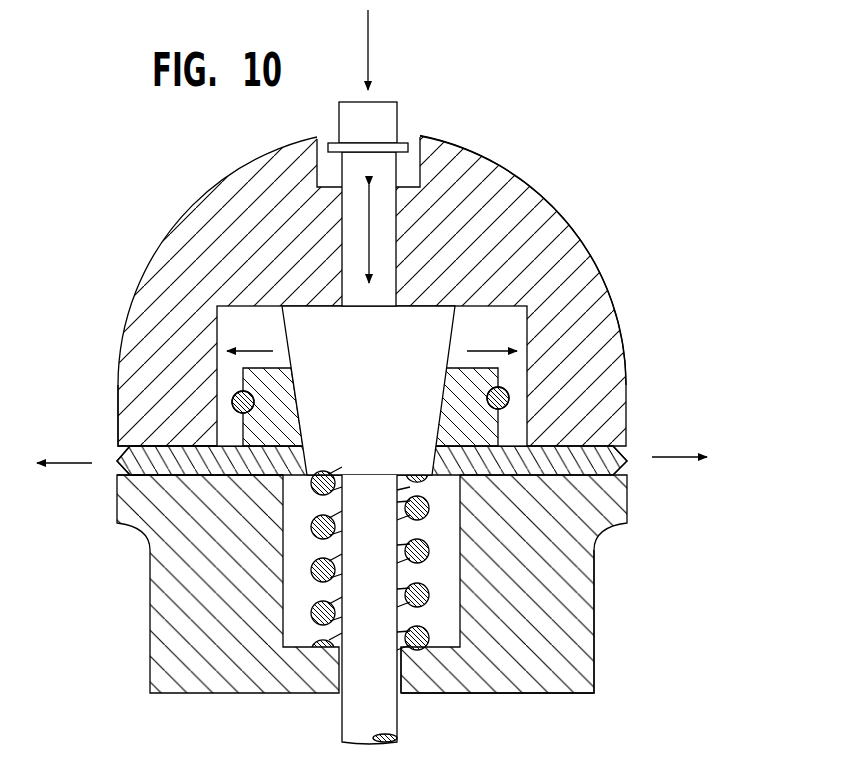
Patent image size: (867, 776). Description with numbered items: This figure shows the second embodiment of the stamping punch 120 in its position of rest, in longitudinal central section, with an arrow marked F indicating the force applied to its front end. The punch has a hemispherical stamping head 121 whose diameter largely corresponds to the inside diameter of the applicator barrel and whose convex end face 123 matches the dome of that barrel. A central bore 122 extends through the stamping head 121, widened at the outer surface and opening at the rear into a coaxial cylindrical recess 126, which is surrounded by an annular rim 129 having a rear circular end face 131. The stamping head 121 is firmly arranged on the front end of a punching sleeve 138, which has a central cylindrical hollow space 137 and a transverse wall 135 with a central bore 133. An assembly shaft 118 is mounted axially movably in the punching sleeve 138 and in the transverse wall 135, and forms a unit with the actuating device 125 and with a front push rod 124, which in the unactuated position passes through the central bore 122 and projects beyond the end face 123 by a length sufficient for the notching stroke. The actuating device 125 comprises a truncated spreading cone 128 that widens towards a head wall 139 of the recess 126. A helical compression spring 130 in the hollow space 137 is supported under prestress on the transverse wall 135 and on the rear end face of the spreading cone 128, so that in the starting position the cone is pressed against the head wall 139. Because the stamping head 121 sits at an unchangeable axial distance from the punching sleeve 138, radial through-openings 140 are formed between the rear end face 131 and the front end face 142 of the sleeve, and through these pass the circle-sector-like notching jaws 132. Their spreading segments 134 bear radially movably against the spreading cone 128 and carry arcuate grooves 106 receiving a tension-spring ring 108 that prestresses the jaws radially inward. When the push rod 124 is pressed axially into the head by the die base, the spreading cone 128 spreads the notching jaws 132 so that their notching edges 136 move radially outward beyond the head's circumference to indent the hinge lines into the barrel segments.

The applied force F is at (368, 16).
The stamping punch 120 is at (170, 205).
The stamping head 121 is at (470, 170).
The end face 123 is at (548, 197).
The push rod 124 is at (380, 117).
The central bore 122 is at (347, 245).
The cylindrical recess 126 is at (218, 326).
The spreading cone 128 is at (450, 300).
The head wall 139 is at (508, 310).
The actuating device 125 is at (458, 333).
The arcuate grooves 106 is at (497, 370).
The tension-spring ring 108 is at (510, 401).
The spreading segments 134 is at (235, 387).
The annular rim 129 is at (152, 413).
The radial through-openings 140 is at (117, 450).
The notching edges 136 is at (600, 468).
The rear end face 131 is at (575, 448).
The front end face 142 is at (162, 468).
The notching jaws 132 is at (197, 482).
The helical compression spring 130 is at (425, 548).
The punching sleeve 138 is at (594, 672).
The assembly shaft 118 is at (355, 582).
The central bore 133 is at (338, 668).
The hollow space 137 is at (443, 622).
The transverse wall 135 is at (423, 668).